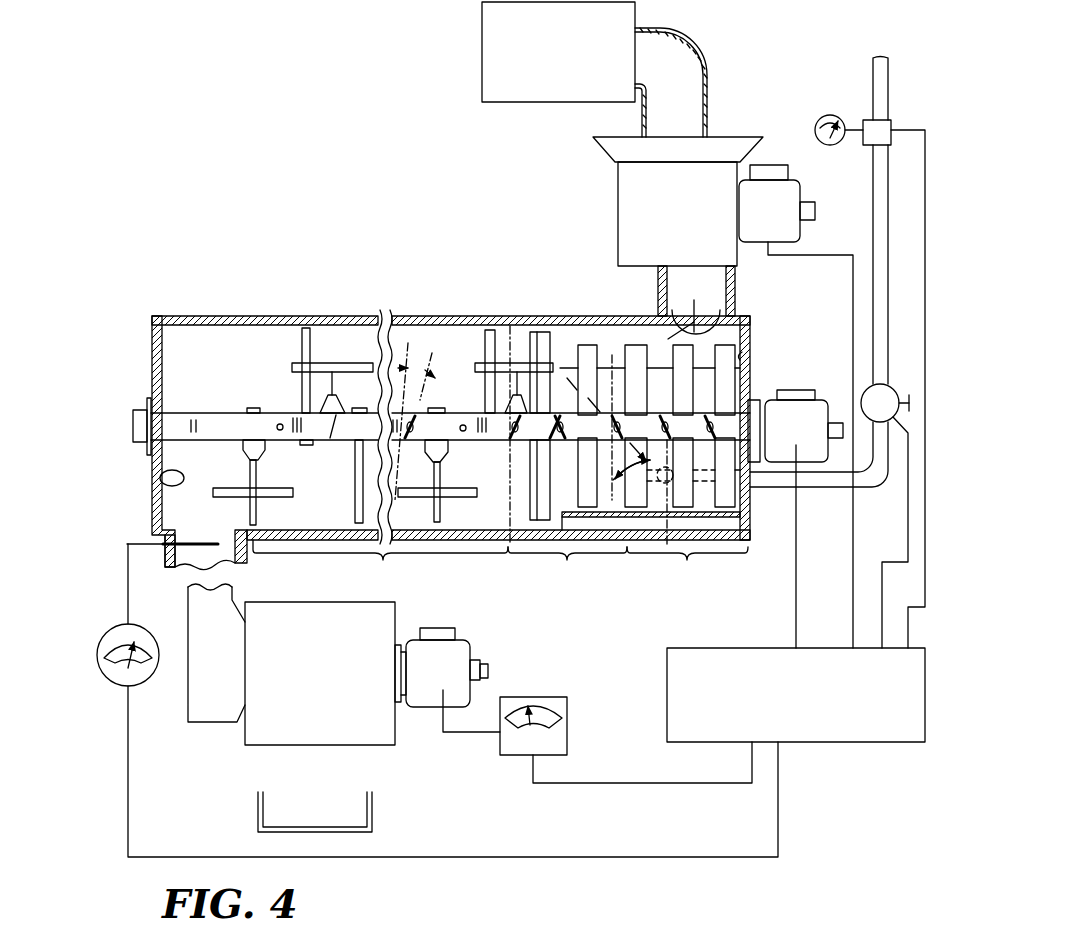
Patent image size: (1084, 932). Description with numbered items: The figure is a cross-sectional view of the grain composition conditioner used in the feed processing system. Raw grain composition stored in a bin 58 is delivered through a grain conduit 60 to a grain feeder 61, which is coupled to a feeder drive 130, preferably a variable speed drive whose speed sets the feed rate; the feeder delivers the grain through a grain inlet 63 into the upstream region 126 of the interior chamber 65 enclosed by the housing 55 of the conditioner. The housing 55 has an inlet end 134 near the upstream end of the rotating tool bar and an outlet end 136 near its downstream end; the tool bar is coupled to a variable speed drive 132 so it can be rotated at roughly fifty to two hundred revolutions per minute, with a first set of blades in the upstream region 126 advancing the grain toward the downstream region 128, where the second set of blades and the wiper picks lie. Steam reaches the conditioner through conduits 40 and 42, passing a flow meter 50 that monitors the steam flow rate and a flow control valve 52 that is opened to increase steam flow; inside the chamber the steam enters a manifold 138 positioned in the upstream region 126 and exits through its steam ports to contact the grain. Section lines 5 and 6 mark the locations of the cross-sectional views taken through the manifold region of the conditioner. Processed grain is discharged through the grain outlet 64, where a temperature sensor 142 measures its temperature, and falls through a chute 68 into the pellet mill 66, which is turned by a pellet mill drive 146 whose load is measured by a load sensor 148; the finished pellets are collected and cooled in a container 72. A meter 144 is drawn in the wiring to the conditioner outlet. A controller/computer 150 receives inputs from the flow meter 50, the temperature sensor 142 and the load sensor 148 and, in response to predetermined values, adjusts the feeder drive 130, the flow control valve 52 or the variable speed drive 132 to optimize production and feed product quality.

The section line 5- 5 is at (750, 270).
The section line 6- 6 is at (586, 298).
The conduit 40 is at (876, 248).
The conduit 42 is at (823, 481).
The flow meter 50 is at (818, 128).
The flow control valve 52 is at (890, 394).
The housing 55 is at (256, 316).
The bin 58 is at (575, 68).
The grain conduit 60 is at (701, 68).
The grain feeder 61 is at (685, 219).
The grain inlet 63 is at (713, 318).
The grain outlet 64 is at (232, 562).
The interior chamber 65 is at (189, 362).
The pellet mill 66 is at (328, 699).
The chute 68 is at (218, 697).
The container 72 is at (372, 816).
The upstream region 126 is at (626, 342).
The downstream region 128 is at (259, 344).
The feeder drive 130 is at (789, 194).
The variable speed drive 132 is at (812, 420).
The inlet end 134 is at (742, 356).
The outlet end 136 is at (162, 482).
The manifold 138 is at (716, 525).
The temperature sensor 142 is at (207, 540).
The meter 144 is at (148, 687).
The pellet mill drive 146 is at (453, 655).
The load sensor 148 is at (553, 697).
The controller/computer 150 is at (840, 730).